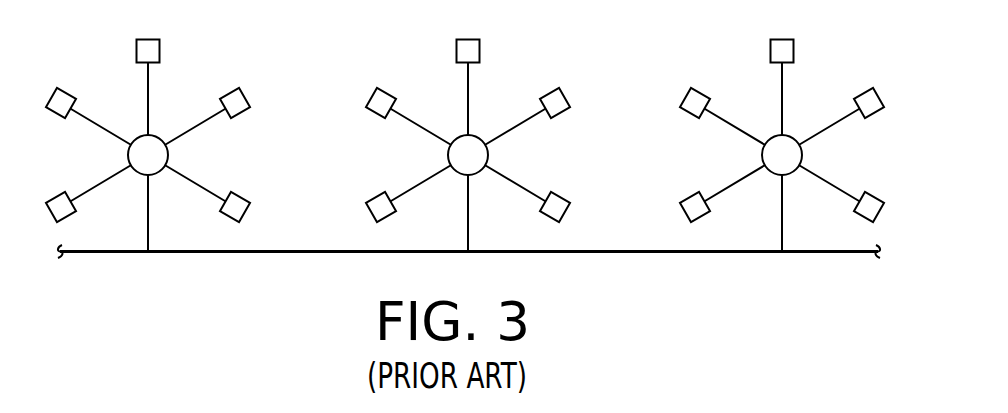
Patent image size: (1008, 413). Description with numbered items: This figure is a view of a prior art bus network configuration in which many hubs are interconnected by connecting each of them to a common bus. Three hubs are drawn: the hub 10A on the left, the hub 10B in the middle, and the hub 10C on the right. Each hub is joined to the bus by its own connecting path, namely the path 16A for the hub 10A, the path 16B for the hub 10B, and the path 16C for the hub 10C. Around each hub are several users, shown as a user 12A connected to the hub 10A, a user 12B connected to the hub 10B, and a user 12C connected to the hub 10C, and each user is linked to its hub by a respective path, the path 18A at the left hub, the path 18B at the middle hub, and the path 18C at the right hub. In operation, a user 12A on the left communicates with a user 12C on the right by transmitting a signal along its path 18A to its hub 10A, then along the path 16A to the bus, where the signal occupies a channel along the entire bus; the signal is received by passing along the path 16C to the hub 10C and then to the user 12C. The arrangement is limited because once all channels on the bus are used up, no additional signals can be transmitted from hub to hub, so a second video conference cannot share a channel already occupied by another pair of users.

The hub 10A is at (154, 136).
The user 12A is at (160, 48).
The path 16A is at (149, 207).
The path 18A is at (148, 80).
The hub 10B is at (474, 136).
The user 12B is at (480, 48).
The path 16B is at (469, 207).
The path 18B is at (468, 80).
The hub 10C is at (776, 136).
The user 12C is at (770, 48).
The path 16C is at (781, 207).
The path 18C is at (782, 80).